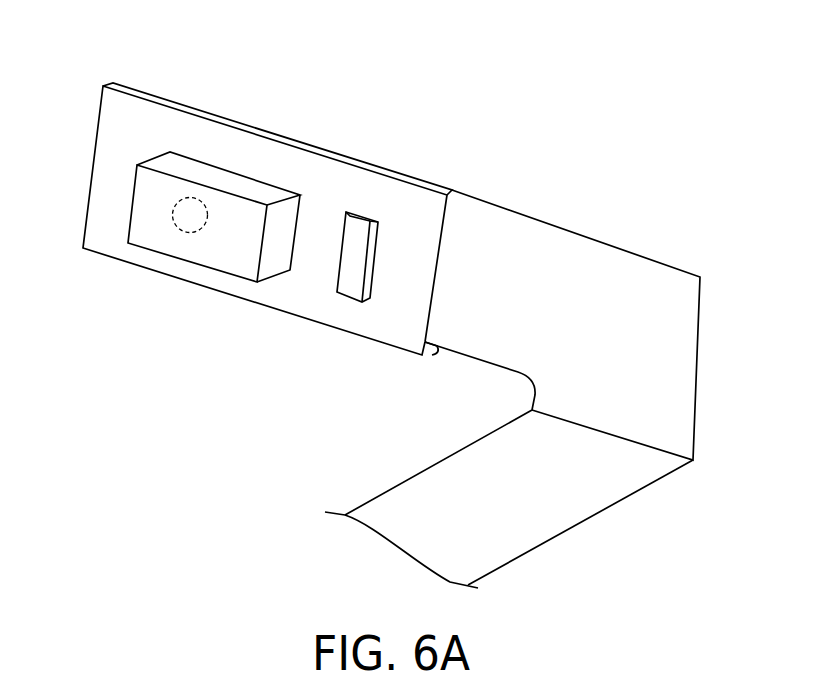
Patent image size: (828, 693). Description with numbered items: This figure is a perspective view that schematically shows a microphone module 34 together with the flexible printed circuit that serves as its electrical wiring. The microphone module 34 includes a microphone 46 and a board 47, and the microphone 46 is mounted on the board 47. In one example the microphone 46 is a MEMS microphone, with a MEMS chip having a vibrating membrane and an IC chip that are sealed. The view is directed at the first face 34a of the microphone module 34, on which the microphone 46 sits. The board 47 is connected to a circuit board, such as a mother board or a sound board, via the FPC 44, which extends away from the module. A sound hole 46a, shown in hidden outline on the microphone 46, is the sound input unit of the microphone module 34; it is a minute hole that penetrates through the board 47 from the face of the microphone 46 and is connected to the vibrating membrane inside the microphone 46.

The microphone module 34 is at (276, 85).
The first face 34a is at (147, 230).
The FPC 44 is at (508, 235).
The microphone 46 is at (232, 252).
The sound hole 46a is at (187, 232).
The board 47 is at (322, 173).